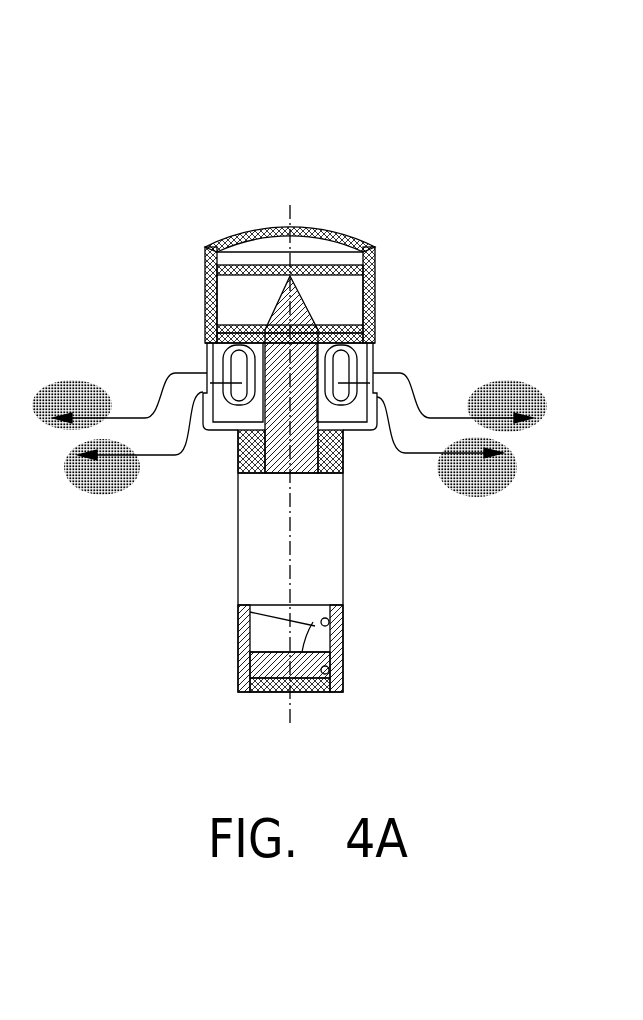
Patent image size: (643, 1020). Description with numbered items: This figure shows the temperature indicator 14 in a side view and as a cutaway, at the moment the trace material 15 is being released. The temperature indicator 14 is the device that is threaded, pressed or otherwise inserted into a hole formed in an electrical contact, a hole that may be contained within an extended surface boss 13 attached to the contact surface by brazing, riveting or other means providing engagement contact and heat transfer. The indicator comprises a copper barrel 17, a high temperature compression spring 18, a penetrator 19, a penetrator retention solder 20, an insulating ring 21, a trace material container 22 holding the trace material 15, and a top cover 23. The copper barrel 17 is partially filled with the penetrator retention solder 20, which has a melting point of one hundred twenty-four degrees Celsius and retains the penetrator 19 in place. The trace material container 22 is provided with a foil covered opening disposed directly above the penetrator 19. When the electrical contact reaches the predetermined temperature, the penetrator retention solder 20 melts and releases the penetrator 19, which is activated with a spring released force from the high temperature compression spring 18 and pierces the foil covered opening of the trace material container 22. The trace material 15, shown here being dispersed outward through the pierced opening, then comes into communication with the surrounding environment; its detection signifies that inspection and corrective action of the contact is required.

The extended surface boss 13 is at (343, 548).
The temperature indicator 14 is at (256, 150).
The trace material 15 is at (350, 286).
The copper barrel 17 is at (238, 618).
The high temperature compression spring 18 is at (326, 622).
The penetrator 19 is at (368, 322).
The penetrator retention solder 20 is at (343, 668).
The insulating ring 21 is at (205, 343).
The trace material container 22 is at (205, 300).
The top cover 23 is at (330, 237).